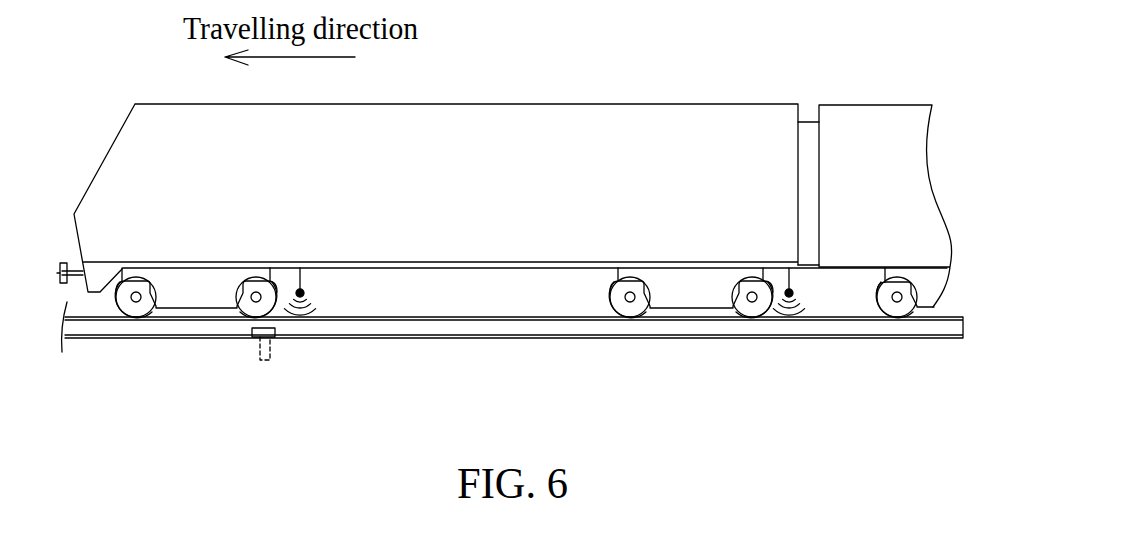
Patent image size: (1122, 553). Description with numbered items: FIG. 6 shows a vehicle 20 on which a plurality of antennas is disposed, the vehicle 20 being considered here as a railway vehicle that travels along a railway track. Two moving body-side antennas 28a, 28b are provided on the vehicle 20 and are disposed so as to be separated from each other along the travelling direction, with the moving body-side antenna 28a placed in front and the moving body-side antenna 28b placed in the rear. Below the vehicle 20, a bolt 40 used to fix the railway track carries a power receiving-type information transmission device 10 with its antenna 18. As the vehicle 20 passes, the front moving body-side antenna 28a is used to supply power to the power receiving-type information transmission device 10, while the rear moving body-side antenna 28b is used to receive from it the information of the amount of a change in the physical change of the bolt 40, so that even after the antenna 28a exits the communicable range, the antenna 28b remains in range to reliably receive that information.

The vehicle 20 is at (539, 125).
The moving body-side antenna 28a is at (301, 290).
The moving body-side antenna 28b is at (790, 276).
The antenna 18 is at (273, 330).
The bolt 40 is at (257, 338).
The power receiving-type information transmission device 10 is at (215, 377).